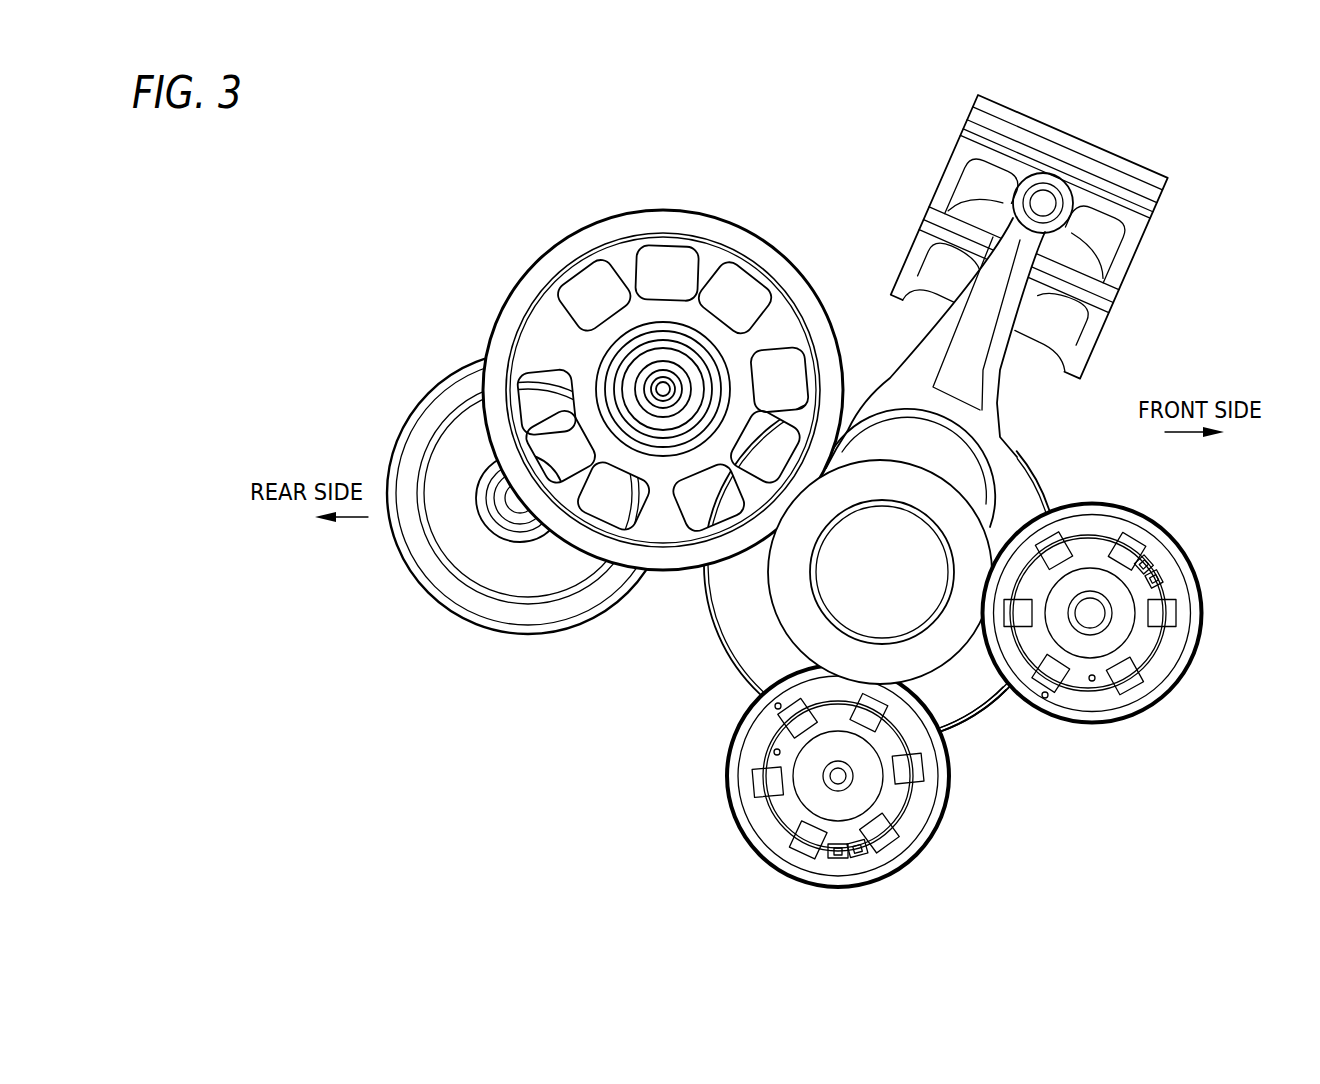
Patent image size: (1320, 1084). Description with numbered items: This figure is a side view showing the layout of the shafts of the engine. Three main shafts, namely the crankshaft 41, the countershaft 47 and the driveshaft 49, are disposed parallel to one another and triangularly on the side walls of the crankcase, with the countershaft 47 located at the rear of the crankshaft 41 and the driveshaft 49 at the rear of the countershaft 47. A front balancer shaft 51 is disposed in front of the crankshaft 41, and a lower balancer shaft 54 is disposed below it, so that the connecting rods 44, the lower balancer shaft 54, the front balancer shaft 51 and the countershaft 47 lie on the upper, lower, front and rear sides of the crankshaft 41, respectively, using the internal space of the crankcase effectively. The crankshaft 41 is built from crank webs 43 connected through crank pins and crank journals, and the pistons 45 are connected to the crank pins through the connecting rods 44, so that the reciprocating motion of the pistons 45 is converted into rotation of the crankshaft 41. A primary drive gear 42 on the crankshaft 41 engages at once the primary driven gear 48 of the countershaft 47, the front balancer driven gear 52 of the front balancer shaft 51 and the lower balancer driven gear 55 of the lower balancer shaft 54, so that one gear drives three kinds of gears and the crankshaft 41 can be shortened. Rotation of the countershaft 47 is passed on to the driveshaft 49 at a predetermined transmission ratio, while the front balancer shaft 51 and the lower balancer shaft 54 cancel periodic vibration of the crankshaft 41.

The crankshaft 41 is at (910, 530).
The primary drive gear 42 is at (776, 610).
The crank webs 43 is at (972, 703).
The connecting rods 44 is at (920, 360).
The pistons 45 is at (1137, 233).
The countershaft 47 is at (667, 370).
The primary driven gear 48 is at (750, 240).
The driveshaft 49 is at (502, 505).
The front balancer shaft 51 is at (1095, 587).
The front balancer driven gear 52 is at (1160, 522).
The lower balancer shaft 54 is at (867, 793).
The lower balancer driven gear 55 is at (950, 793).